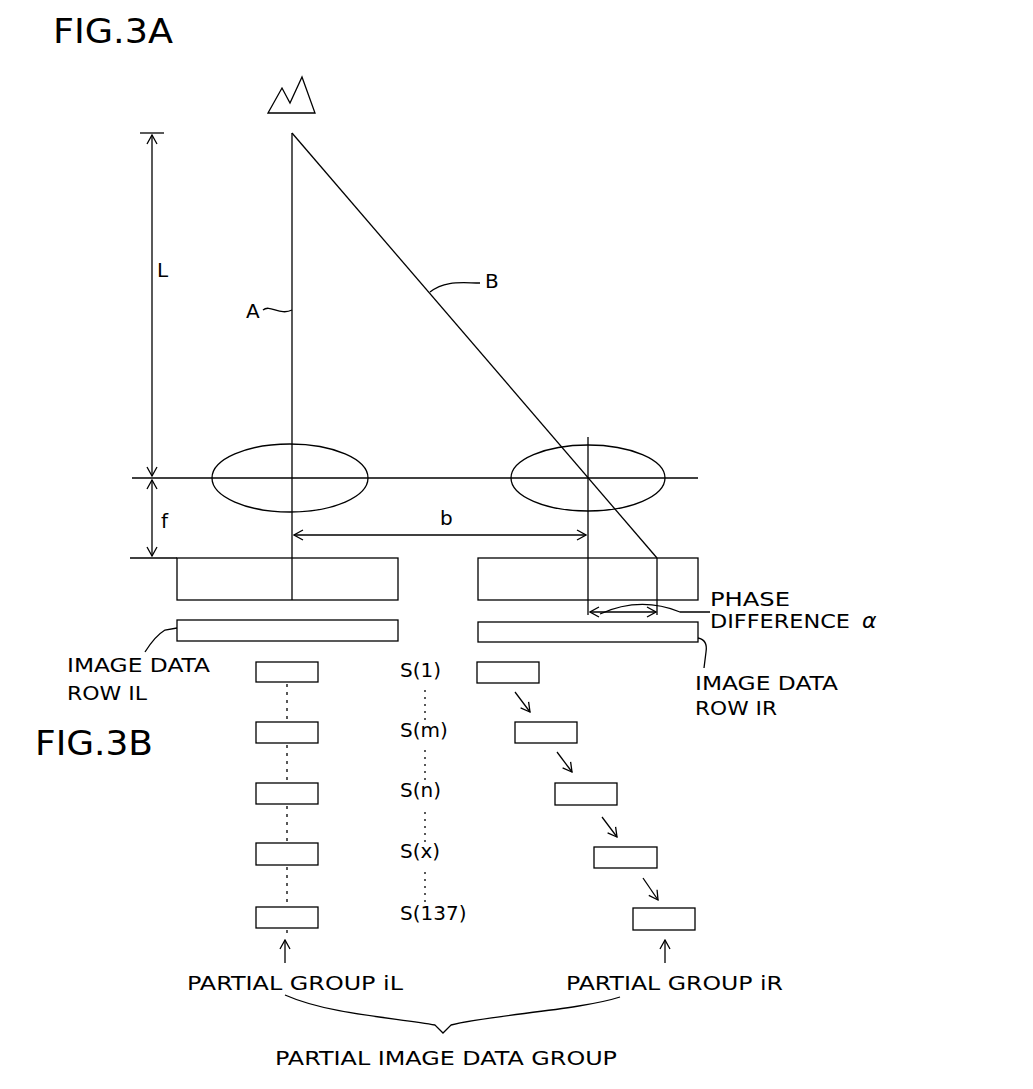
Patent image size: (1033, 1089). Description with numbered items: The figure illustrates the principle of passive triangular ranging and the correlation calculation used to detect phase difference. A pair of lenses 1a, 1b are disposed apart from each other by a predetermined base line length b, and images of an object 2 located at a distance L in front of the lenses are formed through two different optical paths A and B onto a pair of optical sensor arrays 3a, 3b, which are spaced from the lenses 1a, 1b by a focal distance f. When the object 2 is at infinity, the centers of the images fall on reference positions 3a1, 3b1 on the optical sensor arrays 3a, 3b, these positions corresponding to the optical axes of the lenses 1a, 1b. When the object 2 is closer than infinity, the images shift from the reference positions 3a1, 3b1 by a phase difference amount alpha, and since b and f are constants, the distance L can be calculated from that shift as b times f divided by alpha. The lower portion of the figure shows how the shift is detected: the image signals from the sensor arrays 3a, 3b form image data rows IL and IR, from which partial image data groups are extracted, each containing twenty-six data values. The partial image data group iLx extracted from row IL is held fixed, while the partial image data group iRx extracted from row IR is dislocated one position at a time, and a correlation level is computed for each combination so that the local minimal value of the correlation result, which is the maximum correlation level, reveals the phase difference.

In FIG. 3A, the object 2 is at (316, 100).
In FIG. 3A, the lens 1a is at (230, 455).
In FIG. 3A, the lens 1b is at (610, 448).
In FIG. 3A, the optical sensor array 3a is at (177, 578).
In FIG. 3A, the optical sensor array 3b is at (675, 558).
In FIG. 3A, the reference position 3a1 is at (292, 558).
In FIG. 3A, the reference position 3b1 is at (588, 558).
In FIG. 3B, the partial image data group iLx is at (256, 855).
In FIG. 3B, the partial image data group iRx is at (657, 857).